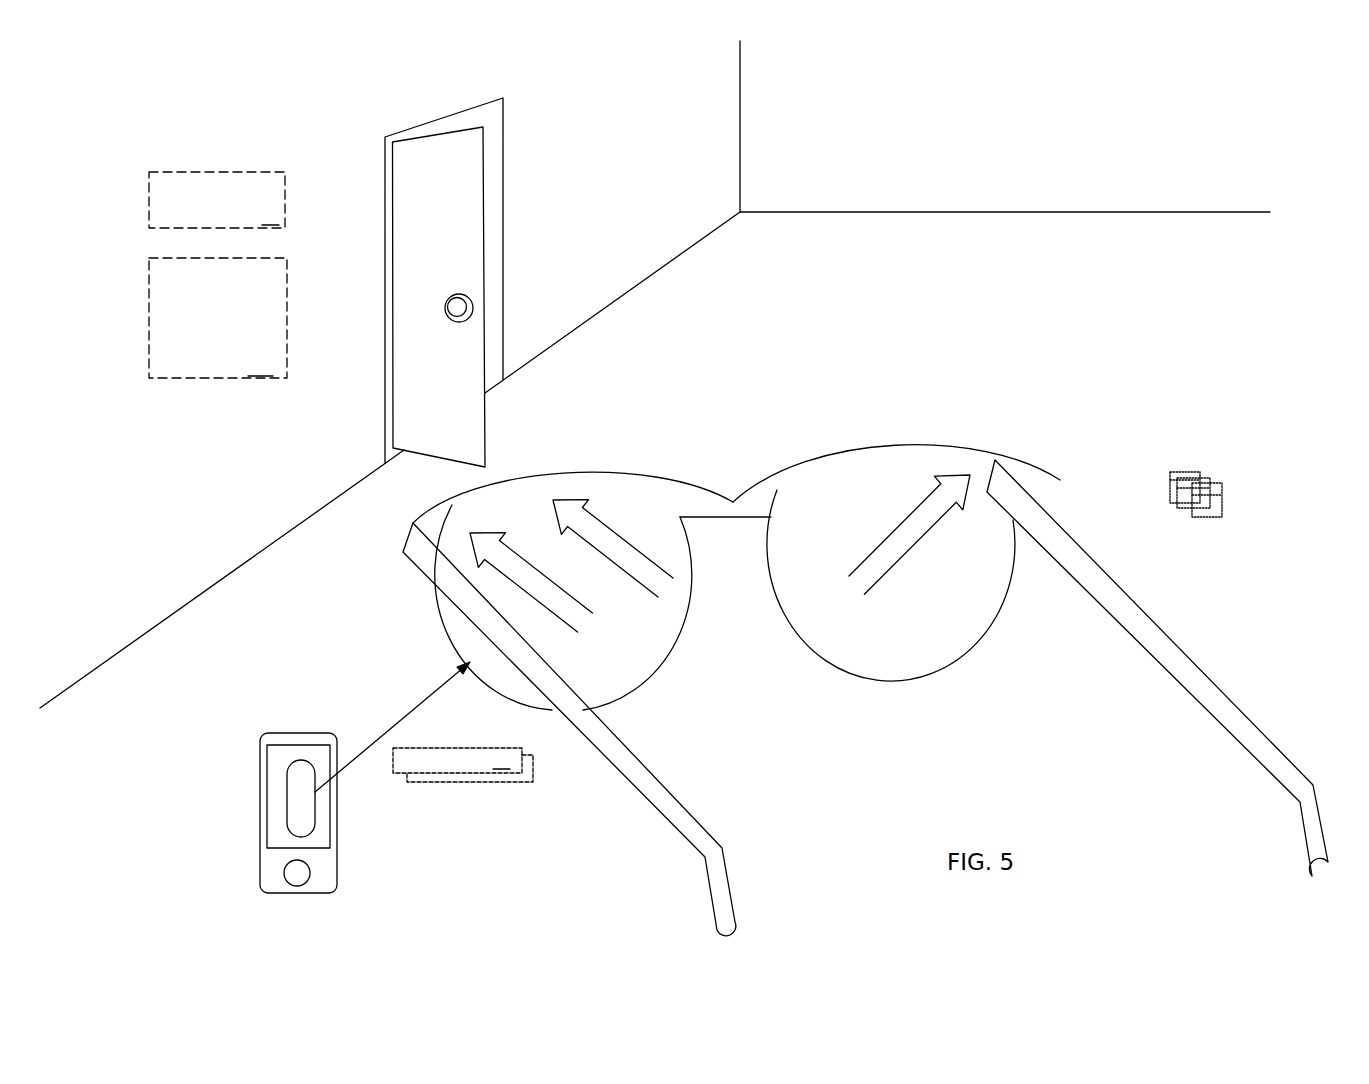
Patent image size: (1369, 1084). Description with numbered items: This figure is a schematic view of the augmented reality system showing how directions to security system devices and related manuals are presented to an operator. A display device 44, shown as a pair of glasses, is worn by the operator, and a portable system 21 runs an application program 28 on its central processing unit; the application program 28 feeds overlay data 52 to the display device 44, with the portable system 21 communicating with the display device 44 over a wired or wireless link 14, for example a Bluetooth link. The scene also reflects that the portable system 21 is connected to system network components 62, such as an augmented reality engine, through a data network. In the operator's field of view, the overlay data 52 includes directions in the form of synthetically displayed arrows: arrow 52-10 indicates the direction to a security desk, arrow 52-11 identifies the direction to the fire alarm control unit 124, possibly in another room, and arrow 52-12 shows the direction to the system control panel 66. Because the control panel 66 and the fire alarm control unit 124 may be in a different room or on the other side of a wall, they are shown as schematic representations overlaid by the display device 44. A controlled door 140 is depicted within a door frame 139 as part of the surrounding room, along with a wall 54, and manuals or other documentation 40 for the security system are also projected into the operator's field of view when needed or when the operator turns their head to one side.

The wireless link 14 is at (398, 727).
The portable system 21 is at (298, 813).
The application program 28 is at (315, 829).
The documentation 40 is at (1213, 517).
The display device 44 is at (1222, 727).
The overlay data 52 is at (463, 765).
The arrow 52-10 is at (913, 500).
The arrow 52-11 is at (608, 527).
The arrow 52-12 is at (497, 575).
The wall of building 54 is at (1124, 334).
The system network components 62 is at (97, 617).
The control panel 66 is at (217, 200).
The fire alarm control unit 124 is at (218, 318).
The door frame 139 is at (503, 187).
The controlled door 140 is at (417, 420).